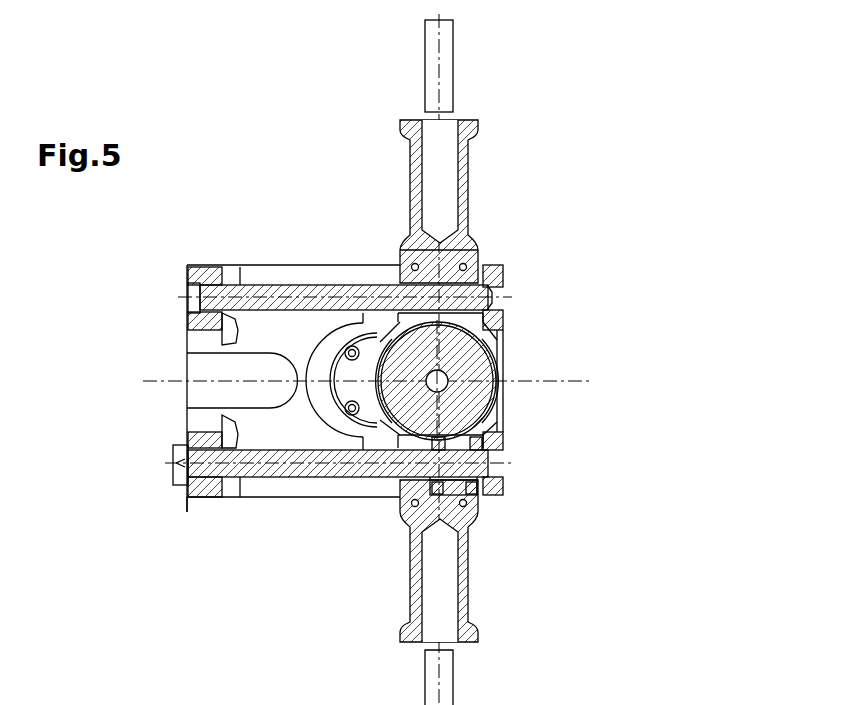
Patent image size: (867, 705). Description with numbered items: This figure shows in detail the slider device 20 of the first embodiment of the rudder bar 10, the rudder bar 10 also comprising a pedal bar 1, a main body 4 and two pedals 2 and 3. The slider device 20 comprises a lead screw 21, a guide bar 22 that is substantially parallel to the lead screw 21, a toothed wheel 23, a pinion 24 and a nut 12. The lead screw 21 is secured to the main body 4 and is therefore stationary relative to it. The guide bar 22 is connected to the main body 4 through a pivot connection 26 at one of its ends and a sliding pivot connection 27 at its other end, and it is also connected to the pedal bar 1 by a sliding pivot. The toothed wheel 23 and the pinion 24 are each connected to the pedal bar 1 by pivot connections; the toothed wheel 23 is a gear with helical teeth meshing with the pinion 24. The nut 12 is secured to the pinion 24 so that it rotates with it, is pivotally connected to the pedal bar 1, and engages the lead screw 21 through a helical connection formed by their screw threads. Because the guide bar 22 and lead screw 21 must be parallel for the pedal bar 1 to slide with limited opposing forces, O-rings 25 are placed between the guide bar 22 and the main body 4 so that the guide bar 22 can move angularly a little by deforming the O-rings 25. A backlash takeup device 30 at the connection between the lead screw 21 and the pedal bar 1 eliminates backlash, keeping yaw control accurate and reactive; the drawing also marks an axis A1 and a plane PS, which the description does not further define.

The pedal bar 1 is at (465, 185).
The pedal 2 is at (432, 87).
The pedal 3 is at (455, 668).
The main body 4 is at (262, 275).
The rudder bar 10 is at (266, 150).
The nut 12 is at (422, 482).
The slider device 20 is at (160, 500).
The lead screw 21 is at (305, 470).
The guide bar 22 is at (432, 292).
The toothed wheel 23 is at (463, 407).
The pinion 24 is at (438, 490).
The O-rings 25 is at (213, 268).
The pivot connection 26 is at (200, 267).
The sliding pivot connection 27 is at (487, 288).
The backlash takeup device 30 is at (503, 487).
The pivot axis A1 is at (440, 377).
The plane of symmetry PS is at (158, 381).